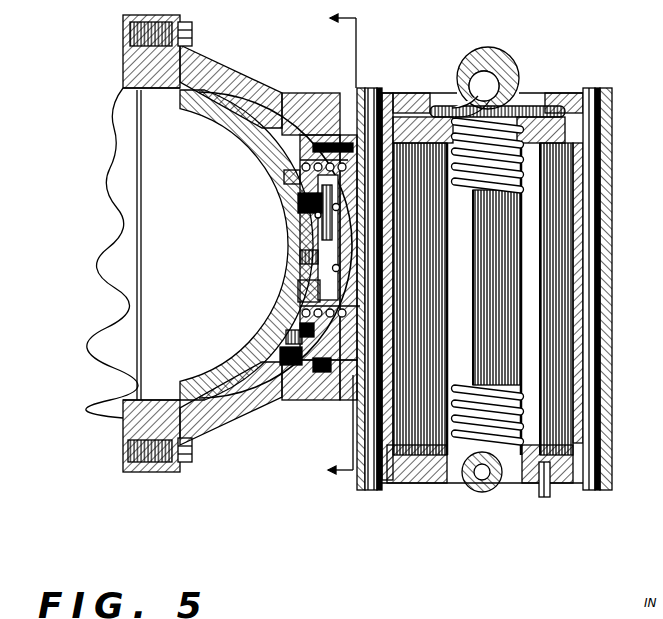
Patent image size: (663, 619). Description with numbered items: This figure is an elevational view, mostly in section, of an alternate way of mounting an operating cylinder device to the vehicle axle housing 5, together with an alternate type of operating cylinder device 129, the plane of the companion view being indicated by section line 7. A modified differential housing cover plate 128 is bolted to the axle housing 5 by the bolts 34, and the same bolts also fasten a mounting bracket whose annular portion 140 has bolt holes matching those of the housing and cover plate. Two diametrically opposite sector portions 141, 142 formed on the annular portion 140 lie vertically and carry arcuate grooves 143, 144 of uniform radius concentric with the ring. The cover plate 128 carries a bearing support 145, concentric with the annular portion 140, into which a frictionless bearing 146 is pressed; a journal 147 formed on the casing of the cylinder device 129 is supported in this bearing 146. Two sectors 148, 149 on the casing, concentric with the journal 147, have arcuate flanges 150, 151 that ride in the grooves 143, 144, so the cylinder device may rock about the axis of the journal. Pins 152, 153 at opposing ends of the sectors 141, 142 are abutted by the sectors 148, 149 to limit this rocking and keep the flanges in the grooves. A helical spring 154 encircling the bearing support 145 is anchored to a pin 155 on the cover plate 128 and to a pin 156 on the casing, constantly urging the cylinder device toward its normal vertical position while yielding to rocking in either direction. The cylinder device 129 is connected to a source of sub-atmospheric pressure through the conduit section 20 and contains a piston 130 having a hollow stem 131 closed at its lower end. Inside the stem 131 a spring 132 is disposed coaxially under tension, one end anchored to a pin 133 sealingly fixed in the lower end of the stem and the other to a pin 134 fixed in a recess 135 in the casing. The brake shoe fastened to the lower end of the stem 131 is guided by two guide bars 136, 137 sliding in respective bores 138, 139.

The axle housing 5 is at (120, 417).
The section line 7- 7 is at (346, 249).
The conduit section 20 is at (537, 493).
The bolts 34 is at (191, 32).
The differential housing cover plate 128 is at (172, 92).
The operating cylinder device 129 is at (612, 298).
The piston 130 is at (533, 95).
The hollow stem 131 is at (500, 333).
The spring 132 is at (440, 90).
The pin 133 is at (465, 494).
The pin 134 is at (497, 80).
The recess 135 is at (456, 74).
The guide bar 136 is at (300, 195).
The guide bar 137 is at (594, 158).
The bore 138 is at (298, 284).
The bore 139 is at (596, 215).
The annular portion 140 is at (178, 382).
The sector portion 141 is at (275, 95).
The sector portion 142 is at (276, 392).
The arcuate groove 143 is at (316, 130).
The arcuate groove 144 is at (323, 374).
The bearing support 145 is at (305, 258).
The frictionless bearing 146 is at (314, 213).
The journal 147 is at (333, 232).
The sector 148 is at (347, 120).
The sector 149 is at (352, 394).
The arcuate flange 150 is at (264, 152).
The arcuate flange 151 is at (290, 334).
The pin 152 is at (248, 133).
The pin 153 is at (262, 344).
The helical spring 154 is at (290, 178).
The pin 155 is at (292, 321).
The pin 156 is at (296, 306).